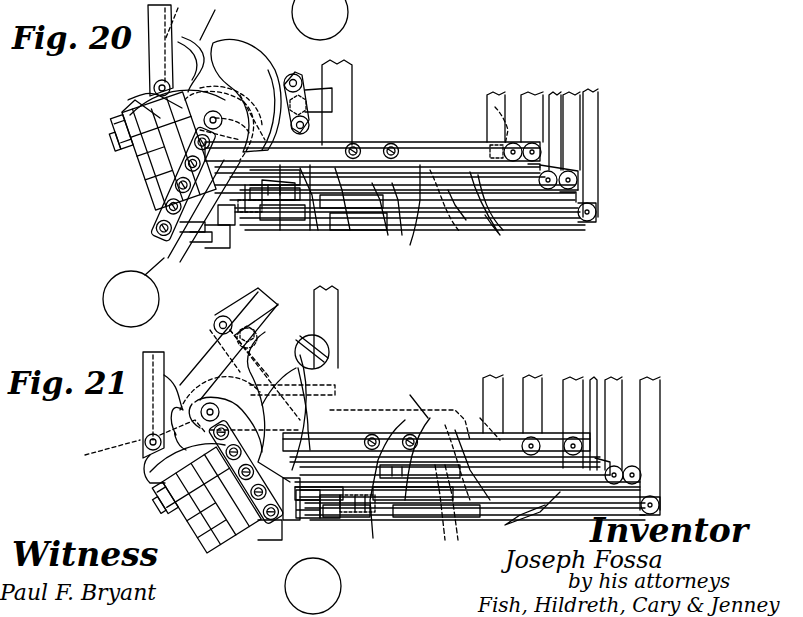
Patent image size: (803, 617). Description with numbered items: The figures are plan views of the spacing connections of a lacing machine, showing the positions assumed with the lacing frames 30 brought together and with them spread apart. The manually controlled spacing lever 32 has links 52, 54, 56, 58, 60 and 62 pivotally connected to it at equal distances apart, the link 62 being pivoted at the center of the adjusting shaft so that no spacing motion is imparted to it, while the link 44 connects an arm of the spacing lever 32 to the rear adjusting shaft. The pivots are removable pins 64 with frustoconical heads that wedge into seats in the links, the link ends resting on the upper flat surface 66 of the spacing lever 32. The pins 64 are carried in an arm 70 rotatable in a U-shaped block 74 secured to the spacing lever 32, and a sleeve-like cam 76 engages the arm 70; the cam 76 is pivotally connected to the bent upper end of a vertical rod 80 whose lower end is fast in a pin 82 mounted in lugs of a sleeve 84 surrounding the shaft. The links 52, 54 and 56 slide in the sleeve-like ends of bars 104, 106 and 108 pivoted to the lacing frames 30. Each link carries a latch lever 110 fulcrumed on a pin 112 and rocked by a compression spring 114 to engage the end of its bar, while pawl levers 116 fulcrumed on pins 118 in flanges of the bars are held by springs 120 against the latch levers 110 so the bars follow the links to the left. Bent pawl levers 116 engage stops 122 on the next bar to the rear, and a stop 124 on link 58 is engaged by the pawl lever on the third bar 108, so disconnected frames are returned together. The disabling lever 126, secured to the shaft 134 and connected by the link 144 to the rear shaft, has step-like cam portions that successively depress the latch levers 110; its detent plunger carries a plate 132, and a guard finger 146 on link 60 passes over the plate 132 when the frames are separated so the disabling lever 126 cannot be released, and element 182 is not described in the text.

In FIG. 20, the lacing mechanism frame 30 is at (605, 82).
In FIG. 21, the lacing mechanism frame 30 is at (480, 380).
In FIG. 20, the spacing lever 32 is at (158, 288).
In FIG. 21, the spacing lever 32 is at (296, 318).
In FIG. 20, the link 44 is at (352, 108).
In FIG. 21, the link 44 is at (338, 315).
In FIG. 20, the link 52 is at (178, 240).
In FIG. 21, the link 52 is at (292, 522).
In FIG. 20, the link 54 is at (200, 245).
In FIG. 21, the link 54 is at (312, 522).
In FIG. 20, the link 56 is at (208, 228).
In FIG. 21, the link 56 is at (338, 520).
In FIG. 20, the link 58 is at (422, 235).
In FIG. 21, the link 58 is at (417, 447).
In FIG. 20, the link 60 is at (428, 140).
In FIG. 21, the link 60 is at (500, 420).
In FIG. 20, the link 62 is at (245, 85).
In FIG. 21, the link 62 is at (355, 385).
In FIG. 20, the pin 64 is at (107, 180).
In FIG. 21, the pin 64 is at (177, 505).
In FIG. 20, the upper flat surface 66 is at (140, 220).
In FIG. 21, the upper flat surface 66 is at (228, 493).
In FIG. 20, the arm 70 is at (214, 255).
In FIG. 21, the arm 70 is at (280, 297).
In FIG. 20, the U-shaped block 74 is at (98, 175).
In FIG. 21, the U-shaped block 74 is at (183, 535).
In FIG. 20, the sleeve-like cam 76 is at (143, 160).
In FIG. 21, the sleeve-like cam 76 is at (205, 504).
In FIG. 20, the vertical rod 80 is at (135, 98).
In FIG. 21, the vertical rod 80 is at (150, 465).
In FIG. 20, the pin 82 is at (172, 30).
In FIG. 20, the sleeve 84 is at (200, 40).
In FIG. 21, the sleeve 84 is at (163, 405).
In FIG. 20, the bar 104 is at (552, 220).
In FIG. 21, the bar 104 is at (658, 510).
In FIG. 20, the bar 106 is at (575, 195).
In FIG. 21, the bar 106 is at (645, 485).
In FIG. 20, the bar 108 is at (560, 165).
In FIG. 21, the bar 108 is at (610, 460).
In FIG. 20, the latch lever 110 is at (325, 228).
In FIG. 21, the latch lever 110 is at (390, 413).
In FIG. 20, the pin 112 is at (250, 215).
In FIG. 21, the pin 112 is at (365, 525).
In FIG. 20, the compression spring 114 is at (270, 215).
In FIG. 21, the compression spring 114 is at (232, 316).
In FIG. 20, the pawl lever 116 is at (488, 214).
In FIG. 21, the pawl lever 116 is at (521, 517).
In FIG. 20, the pin 118 is at (387, 217).
In FIG. 21, the pin 118 is at (447, 512).
In FIG. 20, the spring 120 is at (460, 232).
In FIG. 21, the spring 120 is at (456, 456).
In FIG. 20, the stop 122 is at (596, 218).
In FIG. 21, the stop 122 is at (640, 470).
In FIG. 20, the stop 124 is at (556, 90).
In FIG. 21, the stop 124 is at (590, 372).
In FIG. 20, the disabling lever 126 is at (205, 62).
In FIG. 21, the disabling lever 126 is at (205, 372).
In FIG. 20, the plate 132 is at (330, 100).
In FIG. 21, the plate 132 is at (270, 310).
In FIG. 20, the shaft 134 is at (150, 115).
In FIG. 21, the shaft 134 is at (192, 408).
In FIG. 20, the link 144 is at (148, 55).
In FIG. 21, the link 144 is at (150, 426).
In FIG. 20, the guard finger 146 is at (275, 60).
In FIG. 21, the guard finger 146 is at (320, 402).
In FIG. 21, the dashed line 182 is at (109, 448).